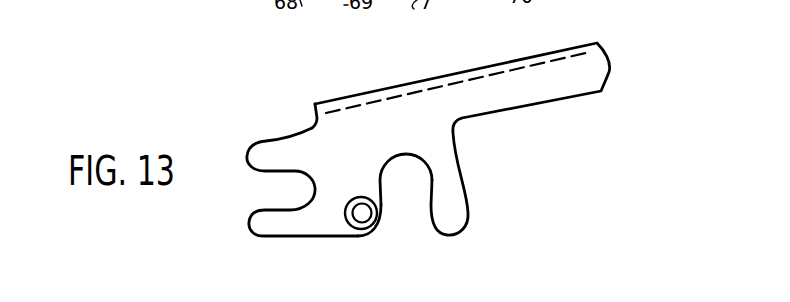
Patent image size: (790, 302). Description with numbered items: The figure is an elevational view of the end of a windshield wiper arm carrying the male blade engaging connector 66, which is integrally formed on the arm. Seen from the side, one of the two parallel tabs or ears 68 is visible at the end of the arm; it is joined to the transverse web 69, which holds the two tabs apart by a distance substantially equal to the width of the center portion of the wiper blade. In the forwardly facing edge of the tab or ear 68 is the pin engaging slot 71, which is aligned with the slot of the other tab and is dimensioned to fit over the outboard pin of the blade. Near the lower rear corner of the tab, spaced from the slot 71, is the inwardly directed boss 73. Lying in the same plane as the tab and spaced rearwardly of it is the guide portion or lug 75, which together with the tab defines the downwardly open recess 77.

The male blade engaging connector 66 is at (526, 57).
The tab or ear 68 is at (303, 226).
The transverse web 69 is at (380, 93).
The pin engaging slot 71 is at (268, 194).
The boss 73 is at (372, 220).
The guide portion or lug 75 is at (458, 201).
The downwardly open recess 77 is at (408, 210).